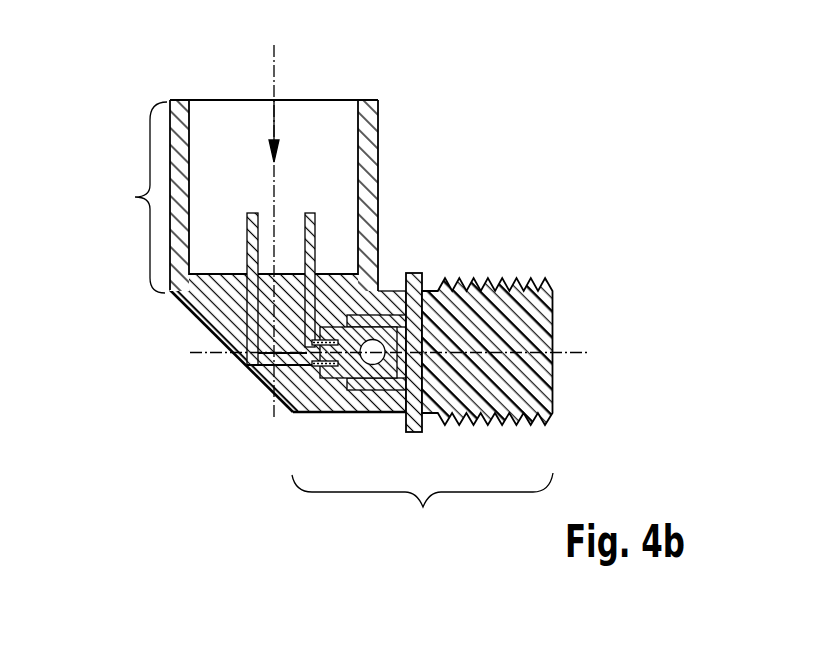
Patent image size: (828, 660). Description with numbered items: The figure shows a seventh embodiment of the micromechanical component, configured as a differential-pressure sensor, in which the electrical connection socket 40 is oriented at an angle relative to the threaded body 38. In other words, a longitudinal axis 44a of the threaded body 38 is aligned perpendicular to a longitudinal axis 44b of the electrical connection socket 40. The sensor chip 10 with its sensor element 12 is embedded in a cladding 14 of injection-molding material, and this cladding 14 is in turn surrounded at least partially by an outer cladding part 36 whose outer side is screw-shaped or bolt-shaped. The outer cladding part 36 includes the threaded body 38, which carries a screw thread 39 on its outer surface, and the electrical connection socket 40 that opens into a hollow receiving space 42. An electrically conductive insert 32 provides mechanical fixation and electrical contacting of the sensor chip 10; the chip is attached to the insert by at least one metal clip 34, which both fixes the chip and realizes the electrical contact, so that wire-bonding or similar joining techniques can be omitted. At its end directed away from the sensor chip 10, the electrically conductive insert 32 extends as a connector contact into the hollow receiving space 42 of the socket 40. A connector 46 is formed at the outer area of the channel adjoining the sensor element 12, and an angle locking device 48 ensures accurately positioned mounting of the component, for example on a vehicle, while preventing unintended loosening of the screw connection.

The sensor chip 10 is at (335, 373).
The sensor element 12 is at (372, 314).
The cladding 14 is at (388, 389).
The electrically conductive insert 32 is at (250, 315).
The metal clip 34 is at (316, 366).
The outer cladding part 36 is at (367, 186).
The threaded body 38 is at (422, 506).
The screw thread 39 is at (521, 424).
The electrical connection socket 40 is at (136, 197).
The hollow receiving space 42 is at (274, 120).
The longitudinal axis of threaded body 44a is at (200, 356).
The longitudinal axis of electrical connection socket 44b is at (273, 49).
The connector 46 is at (371, 366).
The angle locking device 48 is at (413, 282).